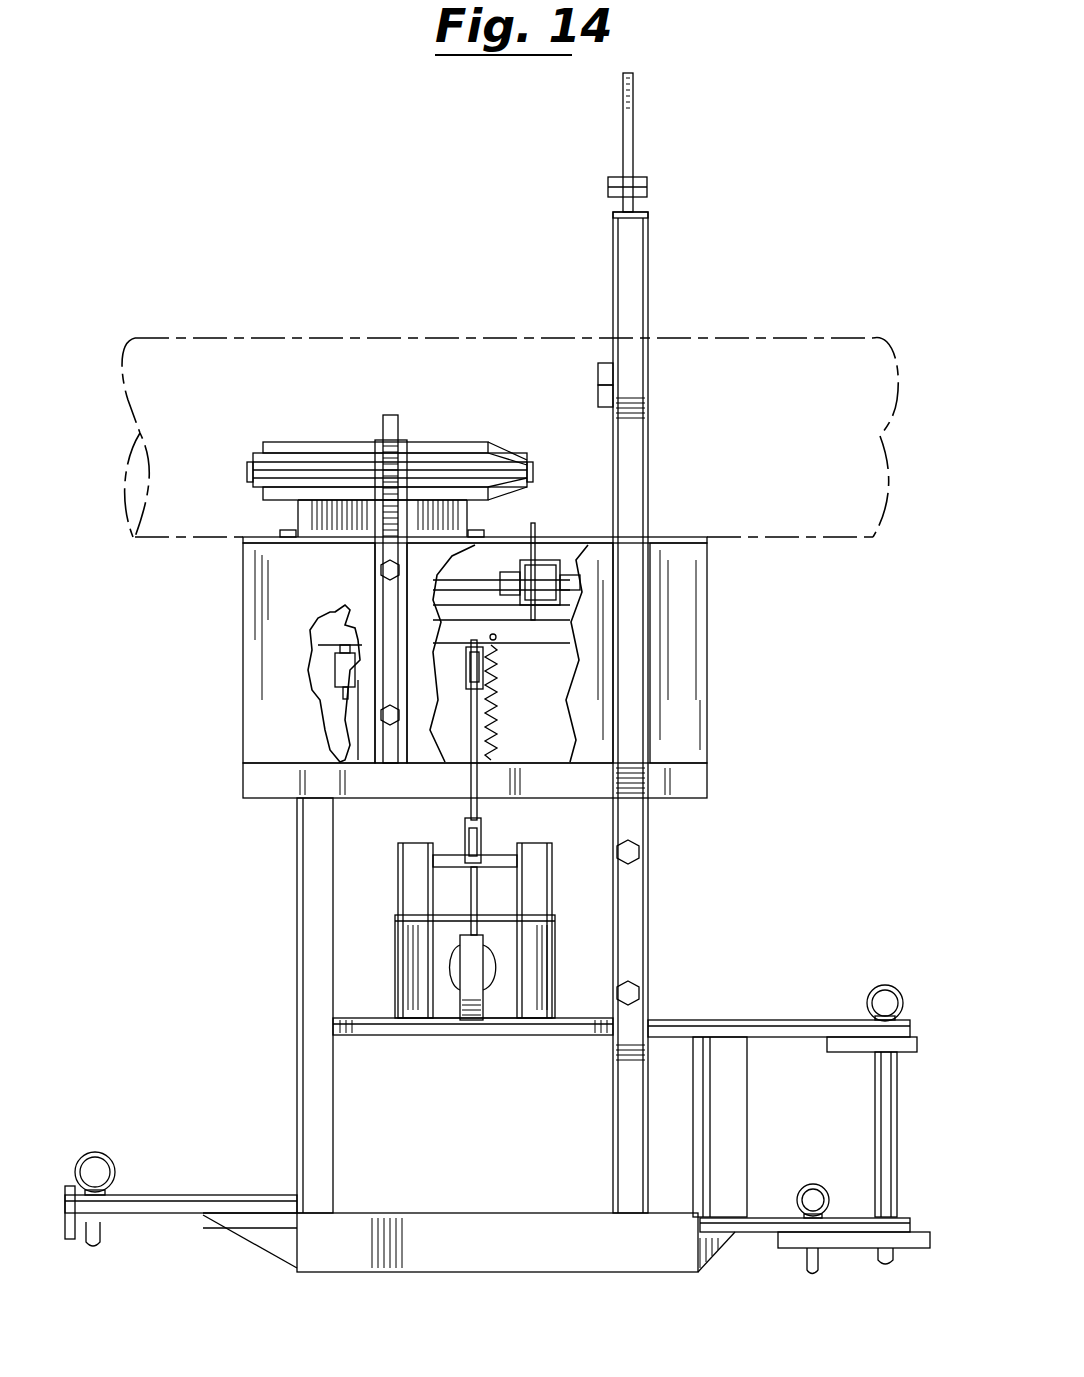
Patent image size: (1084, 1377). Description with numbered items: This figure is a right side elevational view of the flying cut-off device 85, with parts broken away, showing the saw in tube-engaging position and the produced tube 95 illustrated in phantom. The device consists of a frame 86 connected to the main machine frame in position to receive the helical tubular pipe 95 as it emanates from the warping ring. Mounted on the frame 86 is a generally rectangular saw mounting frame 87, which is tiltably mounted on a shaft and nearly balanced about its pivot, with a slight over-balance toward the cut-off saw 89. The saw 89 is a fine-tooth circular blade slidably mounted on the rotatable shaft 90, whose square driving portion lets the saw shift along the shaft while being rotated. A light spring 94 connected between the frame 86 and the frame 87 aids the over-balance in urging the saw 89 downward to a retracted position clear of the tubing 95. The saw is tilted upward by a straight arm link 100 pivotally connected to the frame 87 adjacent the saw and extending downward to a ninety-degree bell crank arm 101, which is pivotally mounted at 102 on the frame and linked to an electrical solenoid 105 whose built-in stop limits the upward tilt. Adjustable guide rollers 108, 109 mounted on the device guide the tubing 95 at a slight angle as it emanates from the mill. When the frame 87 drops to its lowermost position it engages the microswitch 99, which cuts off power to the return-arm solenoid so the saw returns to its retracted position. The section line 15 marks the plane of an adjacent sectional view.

The section line 15- 15 is at (815, 58).
The metal tubing 95 is at (735, 340).
The adjustable guide roller 108 is at (388, 442).
The adjustable guide roller 109 is at (334, 442).
The microswitch 99 is at (305, 660).
The cut-off saw 89 is at (540, 527).
The rotatable shaft 90 is at (565, 560).
The saw mounting frame 87 is at (510, 640).
The light spring 94 is at (498, 690).
The straight arm link 100 is at (480, 718).
The frame 86 is at (648, 893).
The flying cut-off device 85 is at (655, 921).
The pivot 102 is at (500, 858).
The bell crank arm 101 is at (478, 898).
The electrical solenoid 105 is at (497, 965).